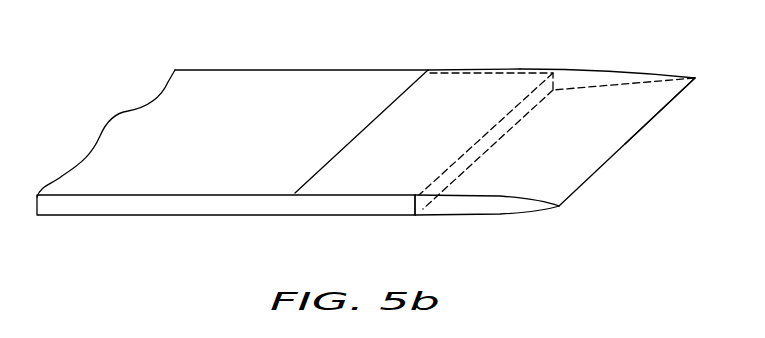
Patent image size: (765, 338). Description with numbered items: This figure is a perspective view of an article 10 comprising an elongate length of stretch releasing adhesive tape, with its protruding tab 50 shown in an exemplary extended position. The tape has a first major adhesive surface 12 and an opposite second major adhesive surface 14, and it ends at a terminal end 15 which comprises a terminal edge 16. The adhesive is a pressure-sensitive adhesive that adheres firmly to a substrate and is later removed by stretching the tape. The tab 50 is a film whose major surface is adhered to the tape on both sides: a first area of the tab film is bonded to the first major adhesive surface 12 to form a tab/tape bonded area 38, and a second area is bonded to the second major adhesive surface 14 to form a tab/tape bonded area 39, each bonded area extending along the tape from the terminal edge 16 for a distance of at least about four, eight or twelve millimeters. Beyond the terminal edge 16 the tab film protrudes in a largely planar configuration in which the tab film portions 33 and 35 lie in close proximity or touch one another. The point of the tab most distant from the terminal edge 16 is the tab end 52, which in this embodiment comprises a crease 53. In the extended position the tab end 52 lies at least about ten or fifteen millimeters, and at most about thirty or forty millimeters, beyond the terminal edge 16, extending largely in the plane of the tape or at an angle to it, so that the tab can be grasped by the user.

The article 10 is at (117, 85).
The first major adhesive surface 12 is at (170, 216).
The second major adhesive surface 14 is at (260, 84).
The terminal end 15 is at (543, 57).
The terminal edge 16 is at (493, 127).
The tab film portion 33 is at (490, 197).
The tab film portion 35 is at (493, 216).
The tab/tape bonded area 38 is at (362, 217).
The tab/tape bonded area 39 is at (478, 68).
The tab 50 is at (615, 42).
The tab end 52 is at (640, 133).
The crease 53 is at (604, 167).